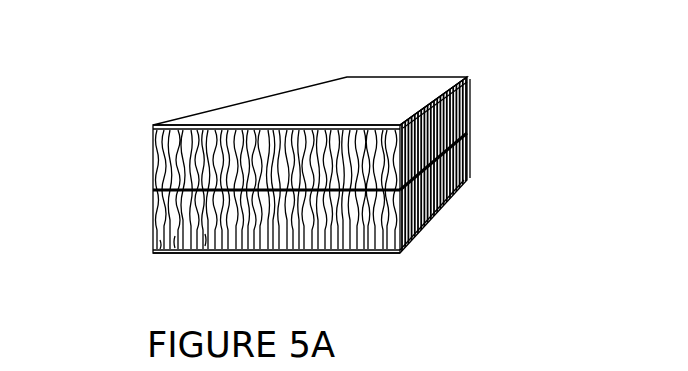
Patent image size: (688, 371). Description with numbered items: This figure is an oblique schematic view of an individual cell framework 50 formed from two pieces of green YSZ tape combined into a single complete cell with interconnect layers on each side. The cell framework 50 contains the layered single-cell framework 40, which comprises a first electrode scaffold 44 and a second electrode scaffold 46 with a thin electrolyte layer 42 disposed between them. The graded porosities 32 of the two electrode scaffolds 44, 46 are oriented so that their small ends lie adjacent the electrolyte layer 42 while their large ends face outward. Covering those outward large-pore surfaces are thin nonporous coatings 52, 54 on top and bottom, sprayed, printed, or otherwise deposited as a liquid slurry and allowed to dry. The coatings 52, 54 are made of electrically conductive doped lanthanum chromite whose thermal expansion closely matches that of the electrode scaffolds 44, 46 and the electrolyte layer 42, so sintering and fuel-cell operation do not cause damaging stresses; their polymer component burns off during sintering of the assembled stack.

The cell framework 50 is at (393, 62).
The nonporous coating 52 is at (315, 110).
The nonporous coating 54 is at (303, 253).
The cell framework 40 is at (142, 129).
The first electrode scaffold 44 is at (470, 107).
The second electrode scaffold 46 is at (465, 181).
The electrolyte layer 42 is at (460, 135).
The graded porosities 32 is at (240, 229).